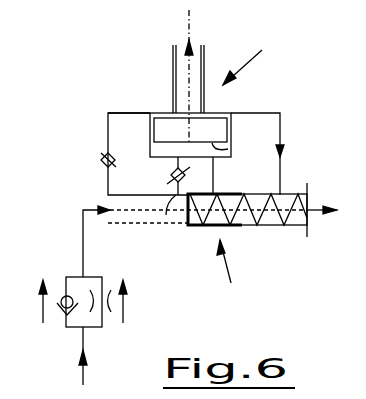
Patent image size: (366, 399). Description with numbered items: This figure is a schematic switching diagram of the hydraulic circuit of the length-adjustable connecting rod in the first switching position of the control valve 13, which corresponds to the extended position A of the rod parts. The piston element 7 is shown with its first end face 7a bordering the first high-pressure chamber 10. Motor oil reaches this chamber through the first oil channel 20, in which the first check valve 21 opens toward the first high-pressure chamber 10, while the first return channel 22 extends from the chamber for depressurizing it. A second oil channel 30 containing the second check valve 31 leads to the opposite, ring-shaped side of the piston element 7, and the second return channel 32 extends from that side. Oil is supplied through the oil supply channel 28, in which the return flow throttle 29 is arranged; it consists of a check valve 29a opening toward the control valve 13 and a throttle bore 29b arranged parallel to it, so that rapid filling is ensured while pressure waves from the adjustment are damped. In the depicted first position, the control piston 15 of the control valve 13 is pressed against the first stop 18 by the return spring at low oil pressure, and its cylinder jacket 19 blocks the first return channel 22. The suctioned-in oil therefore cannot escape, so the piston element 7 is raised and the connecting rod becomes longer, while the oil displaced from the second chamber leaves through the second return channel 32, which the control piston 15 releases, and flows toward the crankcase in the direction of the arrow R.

The piston element 7 is at (208, 128).
The first end face 7a is at (228, 149).
The first high-pressure chamber 10 is at (148, 154).
The control valve 13 is at (233, 278).
The control piston 15 is at (227, 226).
The first stop 18 is at (189, 227).
The cylinder jacket 19 is at (245, 225).
The first oil channel 20 is at (166, 215).
The first check valve 21 is at (171, 176).
The first return channel 22 is at (214, 180).
The oil supply channel 28 is at (86, 378).
The return flow throttle 29 is at (52, 329).
The check valve 29a is at (66, 296).
The throttle bore 29b is at (108, 298).
The second oil channel 30 is at (114, 126).
The second check valve 31 is at (101, 155).
The second return channel 32 is at (281, 136).
The extended position A is at (249, 57).
The arrow R is at (318, 216).